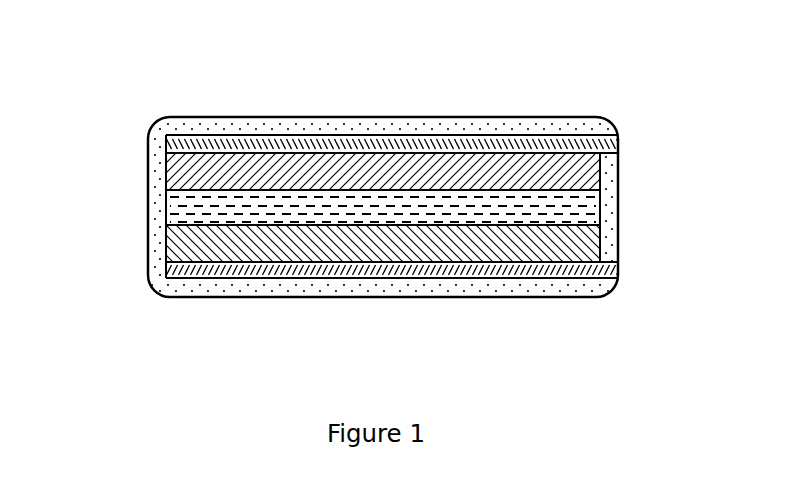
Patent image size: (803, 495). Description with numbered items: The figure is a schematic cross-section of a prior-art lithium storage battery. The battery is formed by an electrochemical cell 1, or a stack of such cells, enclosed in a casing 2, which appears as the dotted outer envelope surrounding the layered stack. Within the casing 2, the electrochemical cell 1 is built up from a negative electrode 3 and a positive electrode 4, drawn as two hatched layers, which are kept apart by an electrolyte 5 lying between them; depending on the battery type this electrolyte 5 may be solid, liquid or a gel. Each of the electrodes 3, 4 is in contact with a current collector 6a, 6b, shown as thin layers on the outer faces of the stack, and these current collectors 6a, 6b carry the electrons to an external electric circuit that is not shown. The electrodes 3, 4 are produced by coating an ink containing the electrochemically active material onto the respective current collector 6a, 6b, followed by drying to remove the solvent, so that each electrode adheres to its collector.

The electrochemical cell 1 is at (635, 262).
The casing 2 is at (177, 125).
The negative electrode 3 is at (183, 173).
The positive electrode 4 is at (383, 245).
The electrolyte 5 is at (490, 207).
The current collector 6a is at (351, 146).
The current collector 6b is at (190, 275).